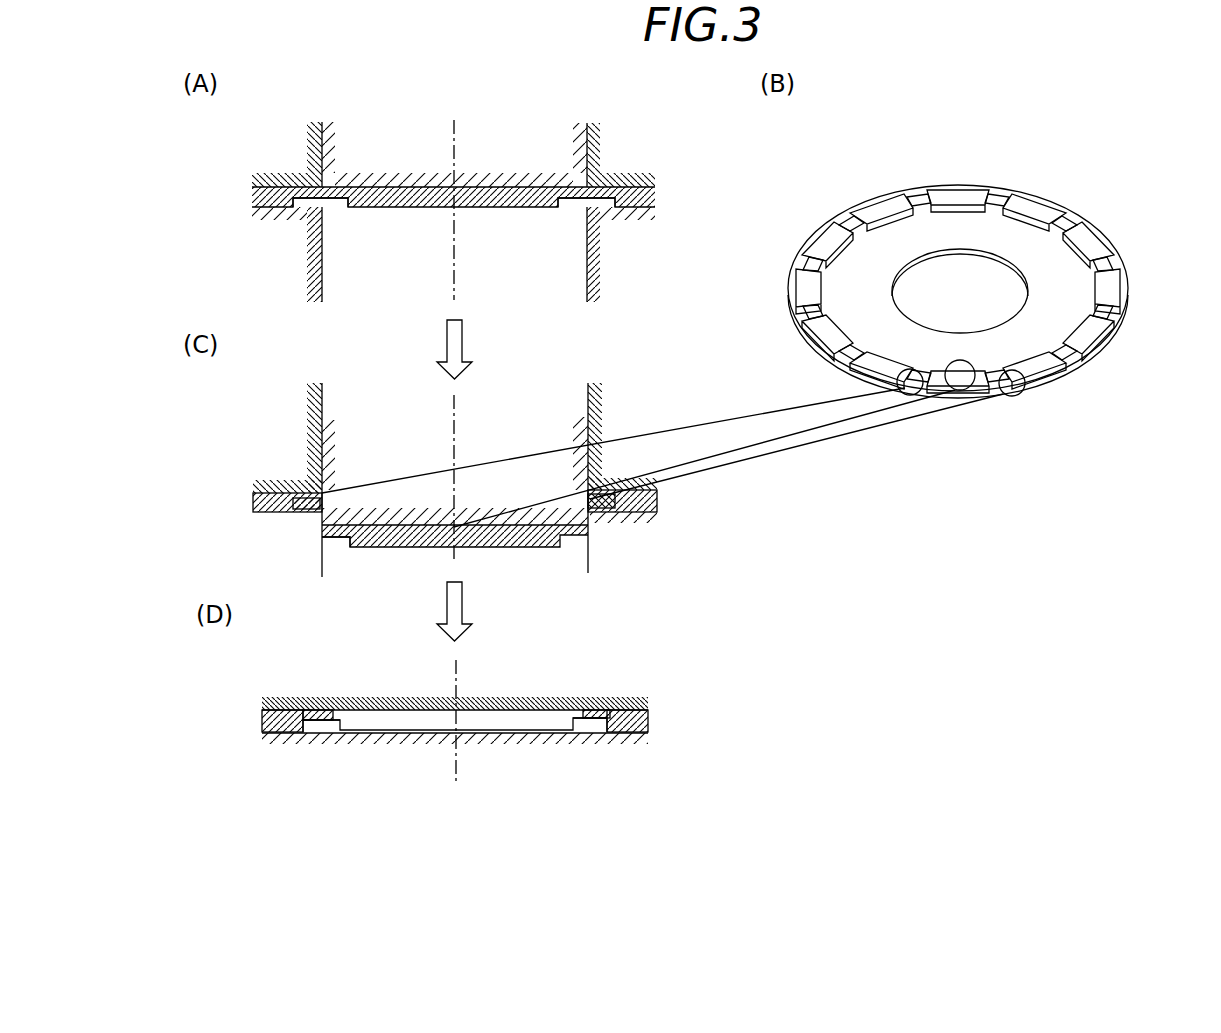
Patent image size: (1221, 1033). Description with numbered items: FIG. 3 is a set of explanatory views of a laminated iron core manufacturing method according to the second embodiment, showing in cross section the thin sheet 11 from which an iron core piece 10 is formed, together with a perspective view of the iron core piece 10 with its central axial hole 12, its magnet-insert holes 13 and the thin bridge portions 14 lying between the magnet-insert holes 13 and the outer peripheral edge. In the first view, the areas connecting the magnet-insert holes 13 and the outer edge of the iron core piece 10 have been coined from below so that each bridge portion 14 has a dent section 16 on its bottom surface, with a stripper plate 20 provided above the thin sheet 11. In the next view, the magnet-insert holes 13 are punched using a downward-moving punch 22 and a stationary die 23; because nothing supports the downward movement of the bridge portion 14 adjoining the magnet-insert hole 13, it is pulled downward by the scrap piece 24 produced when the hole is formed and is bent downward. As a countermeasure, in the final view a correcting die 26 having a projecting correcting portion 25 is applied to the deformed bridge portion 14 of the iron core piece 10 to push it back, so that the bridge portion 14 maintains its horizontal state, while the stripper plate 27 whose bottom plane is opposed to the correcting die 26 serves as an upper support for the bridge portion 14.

The iron core piece 10 is at (725, 316).
The thin sheet 11 is at (652, 198).
The axial hole 12 is at (957, 325).
The magnet-insert hole 13 is at (449, 175).
The bridge portion 14 is at (340, 190).
The dent section 16 is at (320, 213).
The stripper plate 20 is at (632, 177).
The punch 22 is at (555, 140).
The die 23 is at (615, 272).
The scrap piece 24 is at (373, 540).
The correcting portion 25 is at (330, 727).
The correcting die 26 is at (632, 737).
The stripper plate 27 is at (562, 698).